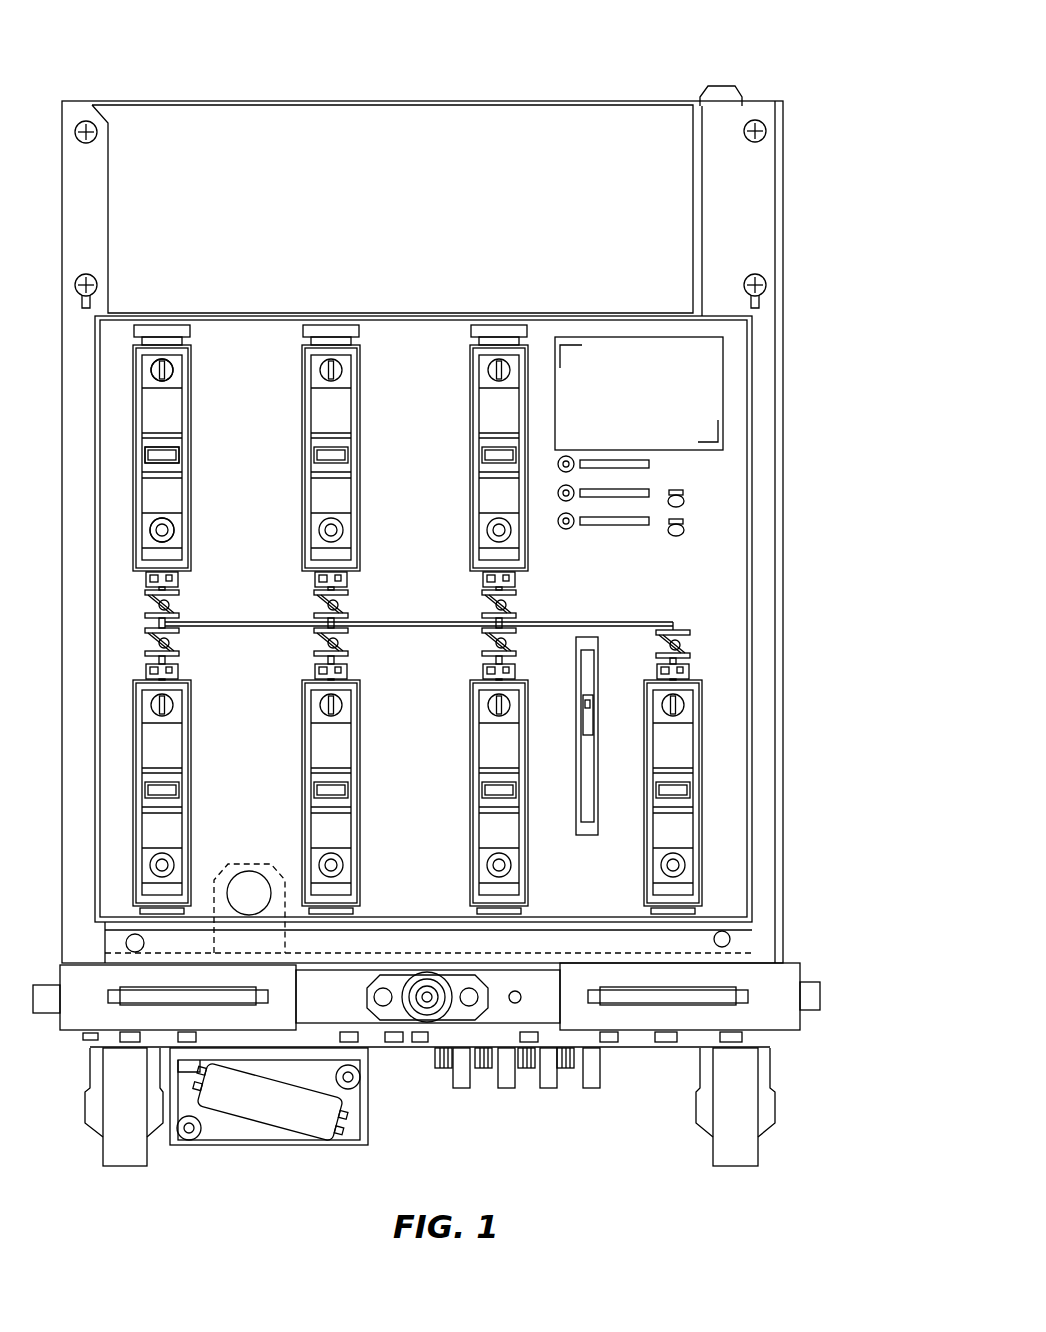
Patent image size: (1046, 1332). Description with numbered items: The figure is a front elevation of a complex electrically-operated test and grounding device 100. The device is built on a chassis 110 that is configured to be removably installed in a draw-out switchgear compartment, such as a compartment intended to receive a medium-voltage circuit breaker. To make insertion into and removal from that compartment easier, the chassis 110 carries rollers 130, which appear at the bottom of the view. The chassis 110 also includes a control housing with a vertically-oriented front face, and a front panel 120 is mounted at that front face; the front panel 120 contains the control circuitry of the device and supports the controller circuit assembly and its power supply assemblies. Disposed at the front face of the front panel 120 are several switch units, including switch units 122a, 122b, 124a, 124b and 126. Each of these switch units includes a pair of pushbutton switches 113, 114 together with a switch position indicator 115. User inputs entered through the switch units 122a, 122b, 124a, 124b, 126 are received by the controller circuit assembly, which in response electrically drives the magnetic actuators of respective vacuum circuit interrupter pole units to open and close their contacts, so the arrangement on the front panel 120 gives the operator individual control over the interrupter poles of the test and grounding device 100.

The test and grounding device 100 is at (474, 75).
The chassis 110 is at (785, 408).
The front panel 120 is at (736, 510).
The switch unit 122a is at (192, 410).
The switch unit 122b is at (362, 372).
The switch unit 124a is at (192, 730).
The switch unit 124b is at (362, 700).
The switch unit 126 is at (690, 693).
The pushbutton switch 113 is at (170, 373).
The pushbutton switch 114 is at (172, 530).
The switch position indicator 115 is at (166, 456).
The rollers 130 is at (758, 1150).